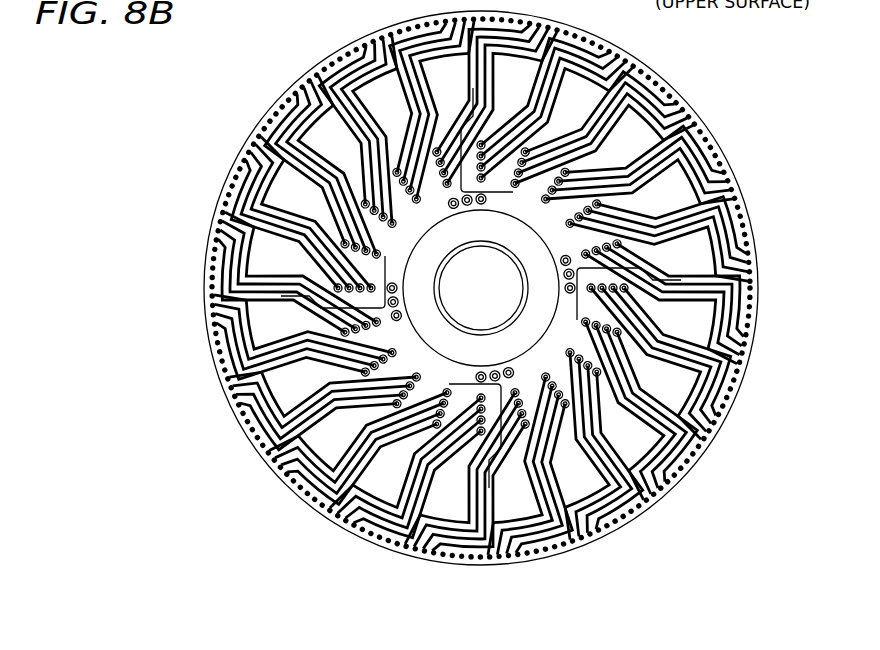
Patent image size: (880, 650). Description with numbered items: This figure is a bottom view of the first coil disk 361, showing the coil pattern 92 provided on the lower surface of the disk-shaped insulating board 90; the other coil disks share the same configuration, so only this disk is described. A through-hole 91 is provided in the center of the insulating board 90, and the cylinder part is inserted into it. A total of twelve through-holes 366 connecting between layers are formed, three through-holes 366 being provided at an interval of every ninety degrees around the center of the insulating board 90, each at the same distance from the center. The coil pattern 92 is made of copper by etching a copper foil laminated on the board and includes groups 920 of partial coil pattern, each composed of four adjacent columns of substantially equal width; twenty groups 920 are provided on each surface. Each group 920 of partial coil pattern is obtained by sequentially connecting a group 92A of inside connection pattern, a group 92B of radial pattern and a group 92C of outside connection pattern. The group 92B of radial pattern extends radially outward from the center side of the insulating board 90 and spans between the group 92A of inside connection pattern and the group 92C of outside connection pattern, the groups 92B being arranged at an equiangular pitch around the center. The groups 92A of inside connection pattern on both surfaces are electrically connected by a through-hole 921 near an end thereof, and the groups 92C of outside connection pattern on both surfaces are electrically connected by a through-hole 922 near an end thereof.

The first coil disk 361 is at (632, 607).
The insulating board 90 is at (412, 360).
The through-hole 91 is at (463, 322).
The coil pattern 92 is at (258, 304).
The group of partial coil pattern 920 is at (310, 127).
The group of inside connection pattern 92A is at (350, 223).
The group of radial pattern 92B is at (318, 160).
The group of outside connection pattern 92C is at (290, 118).
The through-hole 921 is at (352, 244).
The through-hole 922 is at (312, 75).
The through-hole 366 is at (393, 302).